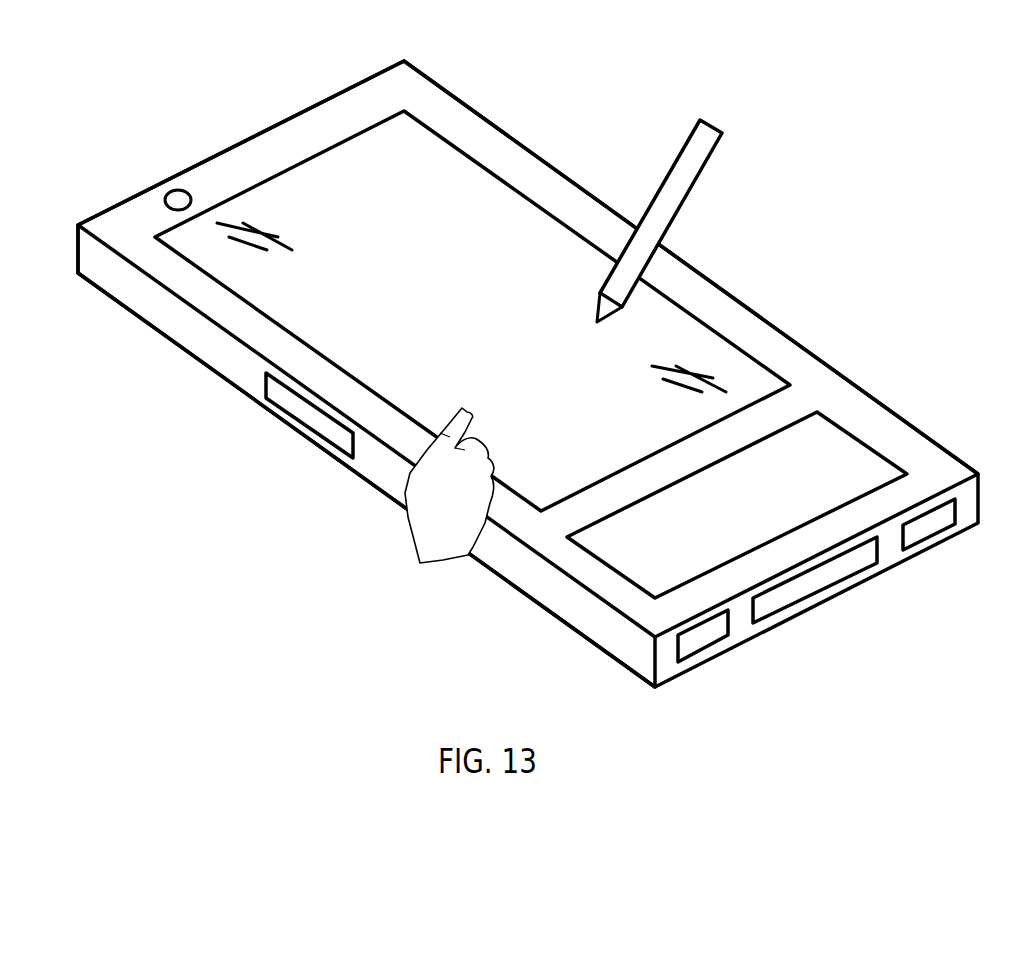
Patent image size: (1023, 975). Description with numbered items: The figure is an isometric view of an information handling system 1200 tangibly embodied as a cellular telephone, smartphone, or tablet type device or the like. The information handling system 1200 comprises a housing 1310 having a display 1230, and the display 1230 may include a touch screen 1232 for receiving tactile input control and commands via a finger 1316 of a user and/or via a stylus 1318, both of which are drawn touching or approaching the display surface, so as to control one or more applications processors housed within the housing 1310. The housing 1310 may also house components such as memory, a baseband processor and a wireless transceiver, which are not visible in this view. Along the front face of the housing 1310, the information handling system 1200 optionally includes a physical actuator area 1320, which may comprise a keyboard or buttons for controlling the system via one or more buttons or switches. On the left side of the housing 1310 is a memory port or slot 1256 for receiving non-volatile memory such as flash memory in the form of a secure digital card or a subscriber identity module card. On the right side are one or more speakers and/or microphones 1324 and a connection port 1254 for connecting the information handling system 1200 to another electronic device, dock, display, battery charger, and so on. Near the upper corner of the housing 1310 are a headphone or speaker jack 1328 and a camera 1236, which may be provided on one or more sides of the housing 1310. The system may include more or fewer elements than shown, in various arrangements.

The information handling system 1200 is at (538, 102).
The housing 1310 is at (342, 92).
The headphone or speaker jack 1328 is at (108, 208).
The display 1230 is at (415, 177).
The touch screen 1232 is at (508, 329).
The camera 1236 is at (177, 190).
The physical actuator area 1320 is at (832, 460).
The memory port or slot 1256 is at (298, 411).
The connection port 1254 is at (833, 585).
The speakers and/or microphones 1324 is at (708, 648).
The stylus 1318 is at (693, 135).
The finger 1316 is at (465, 410).